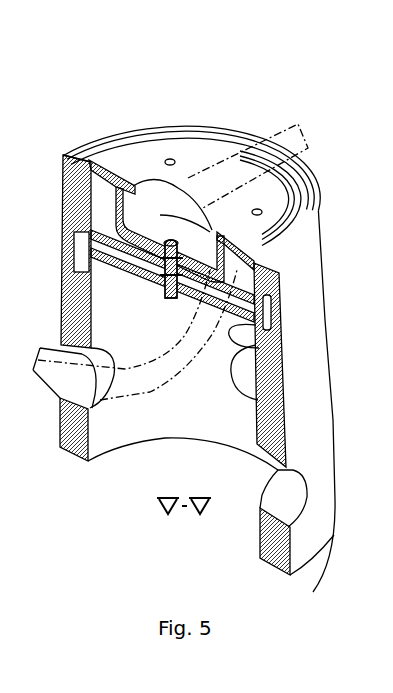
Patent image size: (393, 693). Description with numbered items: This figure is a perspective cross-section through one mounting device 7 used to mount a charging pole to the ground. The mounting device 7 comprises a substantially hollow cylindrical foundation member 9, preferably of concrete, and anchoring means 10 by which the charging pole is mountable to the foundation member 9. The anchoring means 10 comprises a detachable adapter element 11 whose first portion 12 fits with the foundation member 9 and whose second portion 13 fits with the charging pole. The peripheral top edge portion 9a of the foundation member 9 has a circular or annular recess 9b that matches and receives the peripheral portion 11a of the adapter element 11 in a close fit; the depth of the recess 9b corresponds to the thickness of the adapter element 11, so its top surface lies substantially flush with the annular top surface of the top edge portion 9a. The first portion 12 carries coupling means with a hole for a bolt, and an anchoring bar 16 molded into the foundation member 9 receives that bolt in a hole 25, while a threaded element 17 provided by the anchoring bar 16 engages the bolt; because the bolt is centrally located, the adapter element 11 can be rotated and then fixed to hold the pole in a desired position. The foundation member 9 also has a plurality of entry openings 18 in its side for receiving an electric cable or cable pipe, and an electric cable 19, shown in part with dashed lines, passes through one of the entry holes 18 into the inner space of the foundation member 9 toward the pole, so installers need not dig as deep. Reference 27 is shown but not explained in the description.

The mounting device 7 is at (136, 587).
The foundation member 9 is at (64, 207).
The peripheral top edge portion 9a is at (230, 138).
The annular recess 9b is at (85, 162).
The anchoring means 10 is at (148, 158).
The detachable adapter element 11 is at (193, 152).
The peripheral portion of the adapter element 11a is at (176, 140).
The first portion 12 is at (158, 227).
The second portion 13 is at (246, 193).
The anchoring bar 16 is at (259, 347).
The threaded element 17 is at (170, 290).
The entry openings 18 is at (108, 345).
The electric cable 19 is at (145, 392).
The hole 25 is at (180, 292).
The inner wall surface 27 is at (197, 394).